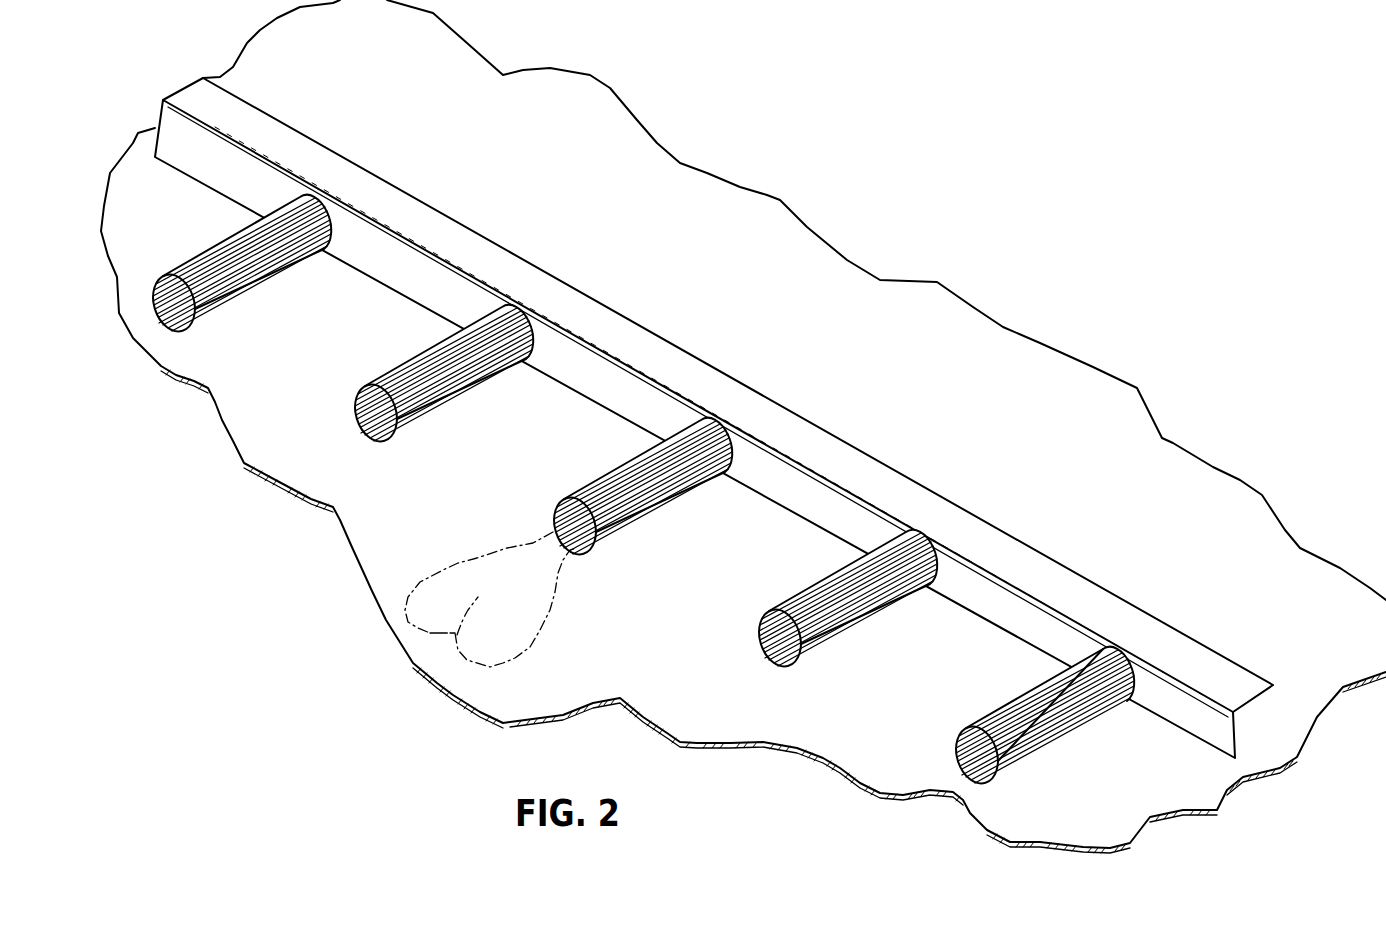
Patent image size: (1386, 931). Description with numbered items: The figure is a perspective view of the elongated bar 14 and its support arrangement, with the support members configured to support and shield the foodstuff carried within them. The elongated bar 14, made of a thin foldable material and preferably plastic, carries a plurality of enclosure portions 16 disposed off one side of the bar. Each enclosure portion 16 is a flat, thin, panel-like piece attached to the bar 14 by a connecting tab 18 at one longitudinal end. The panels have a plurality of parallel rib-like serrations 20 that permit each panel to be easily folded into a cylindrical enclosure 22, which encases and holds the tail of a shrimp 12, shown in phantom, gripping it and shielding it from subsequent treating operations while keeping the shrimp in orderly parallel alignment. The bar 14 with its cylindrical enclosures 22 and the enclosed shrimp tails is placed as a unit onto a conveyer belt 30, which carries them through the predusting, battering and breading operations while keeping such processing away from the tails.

The foodstuff 12 is at (545, 620).
The elongated bar 14 is at (1014, 537).
The enclosure portion 16 is at (640, 492).
The connecting tab 18 is at (1129, 705).
The rib-like serrations 20 is at (250, 289).
The cylindrical enclosure 22 is at (207, 248).
The conveyer belt 30 is at (972, 348).